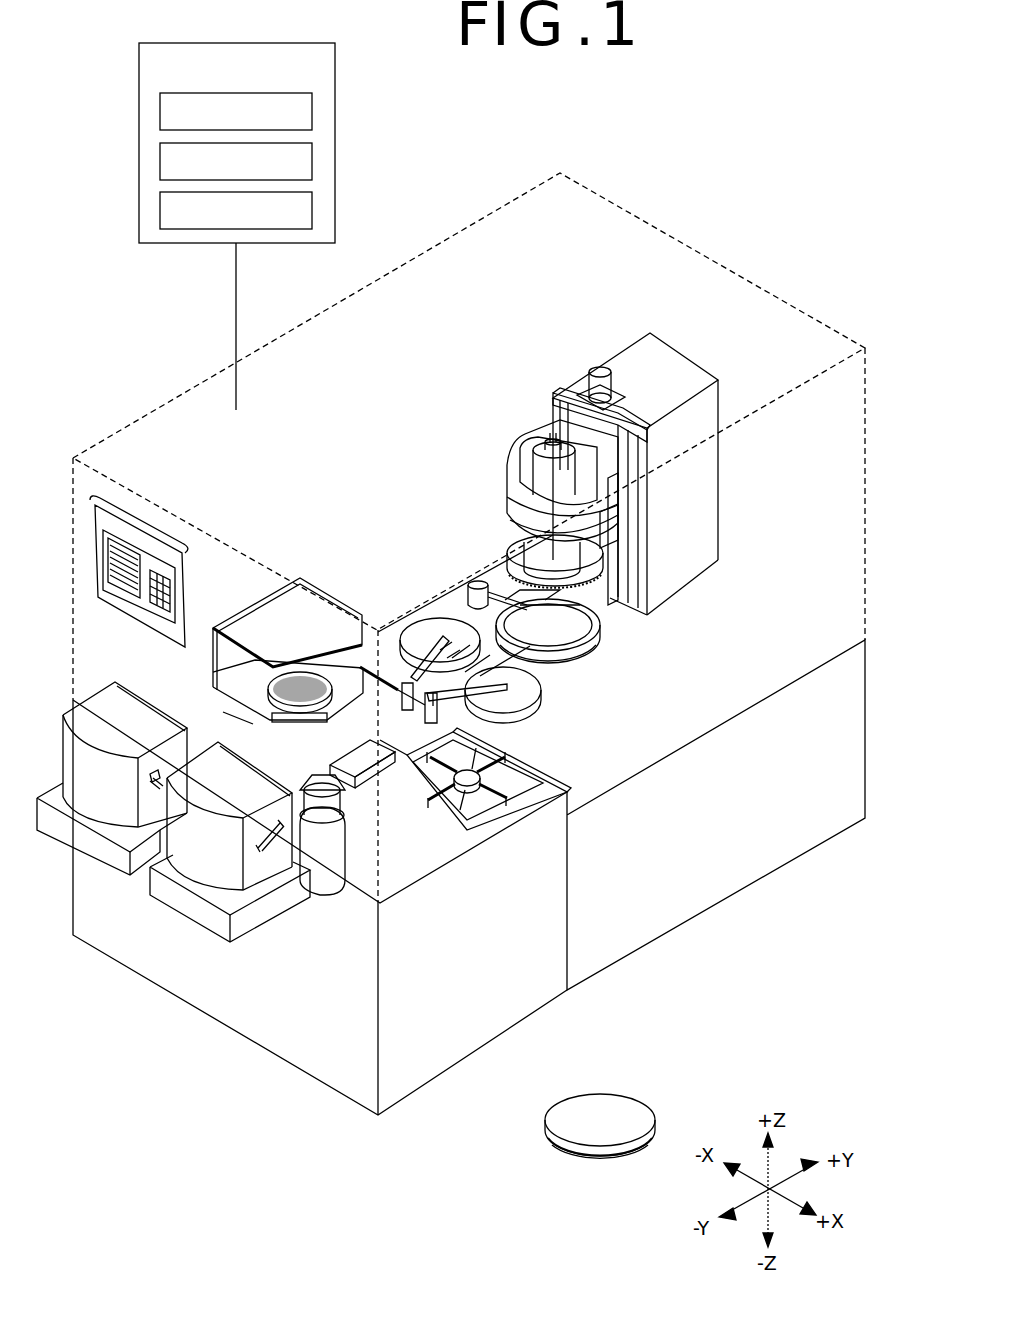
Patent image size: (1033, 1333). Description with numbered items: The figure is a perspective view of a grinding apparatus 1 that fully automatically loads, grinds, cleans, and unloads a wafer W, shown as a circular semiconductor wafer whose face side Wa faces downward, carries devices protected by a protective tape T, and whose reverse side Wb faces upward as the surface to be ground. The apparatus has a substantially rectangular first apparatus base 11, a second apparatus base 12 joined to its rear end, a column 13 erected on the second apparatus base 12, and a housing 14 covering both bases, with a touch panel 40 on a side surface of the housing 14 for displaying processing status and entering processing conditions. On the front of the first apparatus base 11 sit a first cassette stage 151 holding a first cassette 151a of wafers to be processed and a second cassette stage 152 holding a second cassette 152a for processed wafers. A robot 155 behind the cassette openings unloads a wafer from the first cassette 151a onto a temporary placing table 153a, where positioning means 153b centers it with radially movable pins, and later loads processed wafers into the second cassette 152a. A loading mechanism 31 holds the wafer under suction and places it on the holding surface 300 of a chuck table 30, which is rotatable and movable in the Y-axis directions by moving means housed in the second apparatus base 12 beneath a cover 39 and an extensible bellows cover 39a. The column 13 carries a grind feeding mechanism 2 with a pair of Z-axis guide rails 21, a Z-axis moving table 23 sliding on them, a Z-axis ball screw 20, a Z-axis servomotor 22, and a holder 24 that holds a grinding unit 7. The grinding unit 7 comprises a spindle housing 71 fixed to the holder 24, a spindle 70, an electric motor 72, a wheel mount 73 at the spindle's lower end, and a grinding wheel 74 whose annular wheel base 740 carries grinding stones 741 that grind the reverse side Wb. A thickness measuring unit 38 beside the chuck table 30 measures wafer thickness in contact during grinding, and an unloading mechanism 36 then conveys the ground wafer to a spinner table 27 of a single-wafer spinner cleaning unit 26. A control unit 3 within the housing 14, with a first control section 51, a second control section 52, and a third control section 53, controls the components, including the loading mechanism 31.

The grinding apparatus 1 is at (705, 170).
The grind feeding mechanism 2 is at (603, 338).
The control unit 3 is at (139, 85).
The grinding unit 7 is at (508, 422).
The first apparatus base 11 is at (415, 1058).
The second apparatus base 12 is at (733, 852).
The column 13 is at (662, 356).
The housing 14 is at (403, 255).
The Z-axis ball screw 20 is at (620, 412).
The Z-axis guide rails 21 is at (585, 392).
The Z-axis servomotor 22 is at (612, 365).
The Z-axis moving table 23 is at (630, 500).
The holder 24 is at (620, 518).
The single-wafer spinner cleaning unit 26 is at (250, 594).
The spinner table 27 is at (270, 700).
The chuck table 30 is at (585, 650).
The loading mechanism 31 is at (520, 712).
The unloading mechanism 36 is at (432, 610).
The thickness measuring unit 38 is at (478, 585).
The cover 39 is at (545, 668).
The bellows cover 39a is at (532, 716).
The touch panel 40 is at (143, 560).
The first control section 51 is at (160, 108).
The second control section 52 is at (160, 162).
The third control section 53 is at (160, 210).
The spindle 70 is at (550, 470).
The spindle housing 71 is at (518, 488).
The electric motor 72 is at (515, 462).
The wheel mount 73 is at (598, 545).
The grinding wheel 74 is at (716, 606).
The first cassette stage 151 is at (208, 912).
The first cassette 151a is at (190, 858).
The second cassette stage 152 is at (118, 862).
The second cassette 152a is at (95, 805).
The temporary placing table 153a is at (480, 790).
The positioning means 153b is at (518, 790).
The robot 155 is at (340, 850).
The holding surface 300 is at (592, 642).
The wheel base 740 is at (600, 603).
The grinding stones 741 is at (596, 642).
The wafer W is at (660, 1104).
The face side Wa is at (612, 1160).
The reverse side Wb is at (605, 1100).
The protective tape T is at (585, 1158).